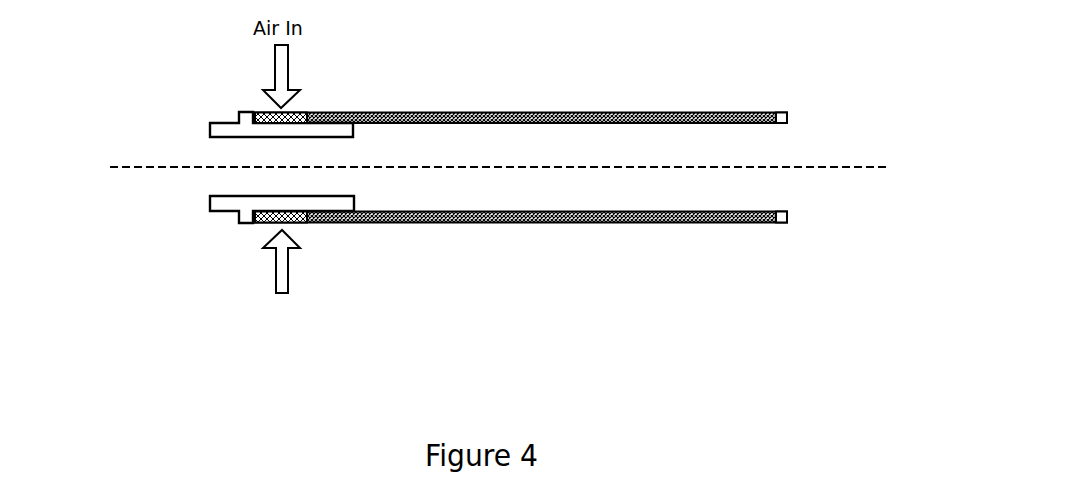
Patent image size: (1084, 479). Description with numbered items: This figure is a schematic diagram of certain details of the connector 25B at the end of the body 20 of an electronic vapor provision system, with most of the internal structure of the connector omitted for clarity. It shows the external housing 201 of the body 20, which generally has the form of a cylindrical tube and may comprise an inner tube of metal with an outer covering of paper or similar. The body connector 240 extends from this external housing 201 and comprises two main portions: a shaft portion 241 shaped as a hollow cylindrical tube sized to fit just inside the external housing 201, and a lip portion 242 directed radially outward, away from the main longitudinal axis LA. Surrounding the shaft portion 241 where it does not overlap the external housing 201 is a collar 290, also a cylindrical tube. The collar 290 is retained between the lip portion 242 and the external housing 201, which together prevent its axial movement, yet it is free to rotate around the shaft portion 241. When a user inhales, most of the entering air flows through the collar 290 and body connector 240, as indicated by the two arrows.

The body 20 is at (499, 257).
The connector 25B is at (193, 333).
The external housing 201 is at (565, 274).
The body connector 240 is at (215, 160).
The shaft portion 241 is at (337, 247).
The lip portion 242 is at (212, 249).
The collar 290 is at (521, 88).